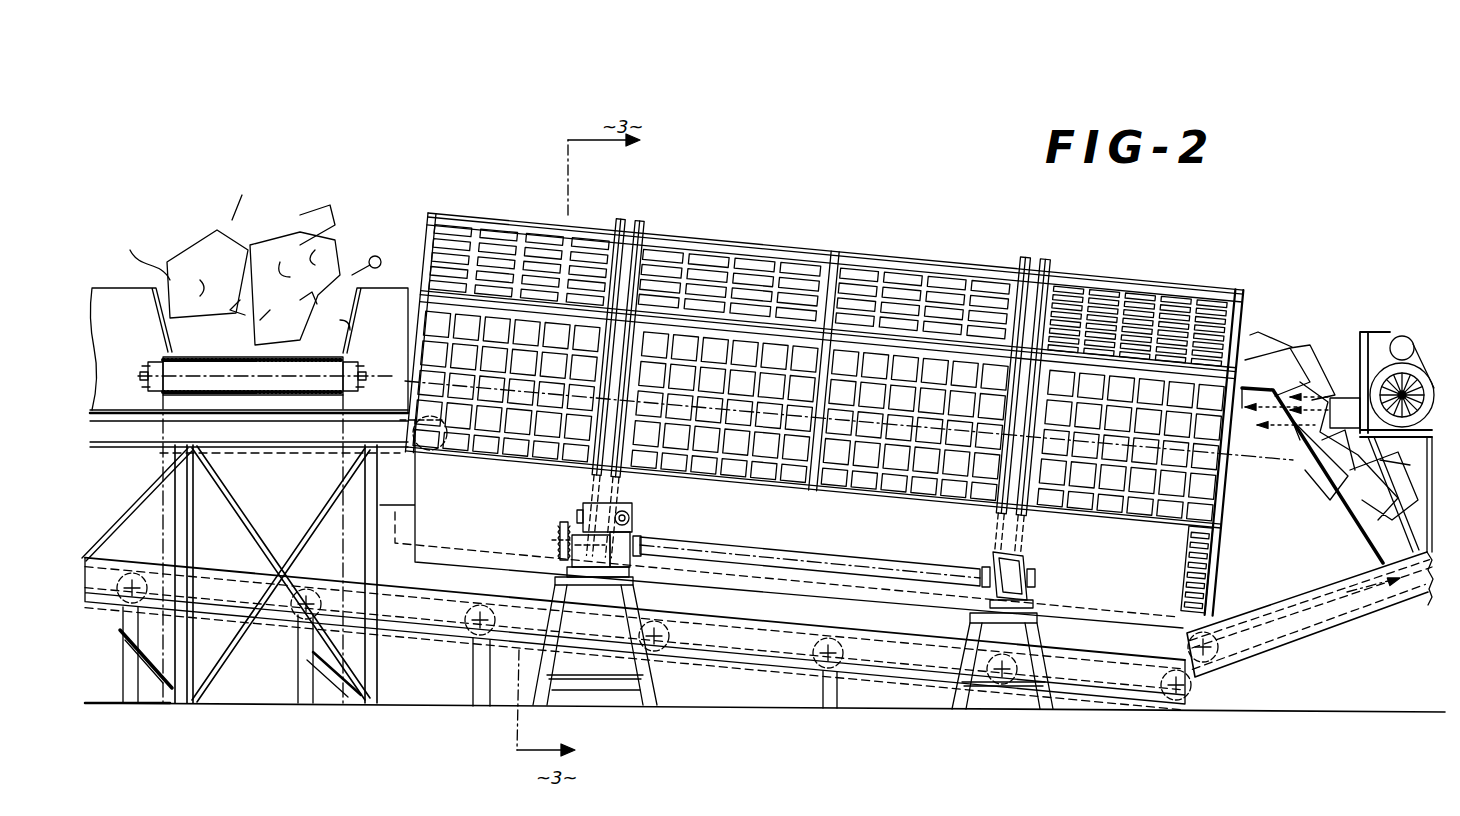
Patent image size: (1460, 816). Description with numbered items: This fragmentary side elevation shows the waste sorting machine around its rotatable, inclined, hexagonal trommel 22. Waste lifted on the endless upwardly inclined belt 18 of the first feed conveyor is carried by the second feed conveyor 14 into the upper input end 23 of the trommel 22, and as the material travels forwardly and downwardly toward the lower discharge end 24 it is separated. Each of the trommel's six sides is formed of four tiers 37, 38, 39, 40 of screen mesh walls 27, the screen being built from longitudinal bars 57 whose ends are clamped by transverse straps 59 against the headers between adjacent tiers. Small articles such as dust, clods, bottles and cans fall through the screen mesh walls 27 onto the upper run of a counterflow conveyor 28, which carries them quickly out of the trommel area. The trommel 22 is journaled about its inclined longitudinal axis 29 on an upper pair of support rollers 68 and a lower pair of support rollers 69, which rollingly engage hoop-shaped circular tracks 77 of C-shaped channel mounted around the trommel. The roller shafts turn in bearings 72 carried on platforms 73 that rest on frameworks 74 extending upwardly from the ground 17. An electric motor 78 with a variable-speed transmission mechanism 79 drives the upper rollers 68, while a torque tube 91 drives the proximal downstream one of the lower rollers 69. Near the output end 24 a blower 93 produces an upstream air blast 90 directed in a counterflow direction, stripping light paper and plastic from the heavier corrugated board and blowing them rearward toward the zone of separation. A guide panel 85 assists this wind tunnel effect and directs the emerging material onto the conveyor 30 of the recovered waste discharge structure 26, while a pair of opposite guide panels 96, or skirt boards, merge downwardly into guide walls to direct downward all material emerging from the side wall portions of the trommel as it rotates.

The second feed conveyor 14 is at (420, 453).
The ground 17 is at (721, 700).
The endless upwardly inclined belt 18 is at (160, 328).
The hexagonal trommel 22 is at (1153, 275).
The upper input end 23 is at (418, 241).
The lower discharge end 24 is at (849, 400).
The recovered waste discharge structure 26 is at (1310, 614).
The screen mesh walls 27 is at (1101, 273).
The counterflow conveyor 28 is at (895, 677).
The longitudinal axis 29 is at (385, 376).
The conveyor 30 is at (1328, 586).
The first tier of screen mesh walls 37 is at (511, 225).
The second tier of screen mesh walls 38 is at (752, 250).
The third tier of screen mesh walls 39 is at (950, 269).
The fourth tier of screen mesh walls 40 is at (1216, 290).
The longitudinal bars 57 is at (797, 290).
The transverse strap 59 is at (693, 257).
The upper support rollers 68 is at (628, 533).
The lower support rollers 69 is at (1012, 565).
The bearings 72 is at (992, 565).
The platforms 73 is at (614, 641).
The frameworks 74 is at (650, 694).
The circular track 77 is at (632, 228).
The electric motor 78 is at (590, 508).
The transmission mechanism 79 is at (585, 557).
The guide panel 85 is at (1287, 549).
The air blast 90 is at (1328, 378).
The torque tube 91 is at (902, 558).
The blower 93 is at (1425, 380).
The guide panels 96 is at (875, 513).